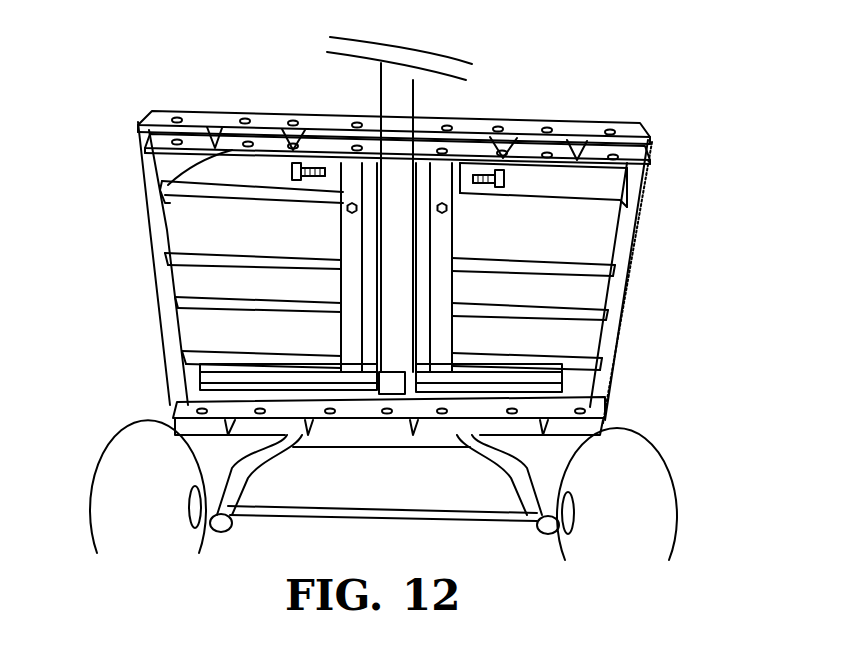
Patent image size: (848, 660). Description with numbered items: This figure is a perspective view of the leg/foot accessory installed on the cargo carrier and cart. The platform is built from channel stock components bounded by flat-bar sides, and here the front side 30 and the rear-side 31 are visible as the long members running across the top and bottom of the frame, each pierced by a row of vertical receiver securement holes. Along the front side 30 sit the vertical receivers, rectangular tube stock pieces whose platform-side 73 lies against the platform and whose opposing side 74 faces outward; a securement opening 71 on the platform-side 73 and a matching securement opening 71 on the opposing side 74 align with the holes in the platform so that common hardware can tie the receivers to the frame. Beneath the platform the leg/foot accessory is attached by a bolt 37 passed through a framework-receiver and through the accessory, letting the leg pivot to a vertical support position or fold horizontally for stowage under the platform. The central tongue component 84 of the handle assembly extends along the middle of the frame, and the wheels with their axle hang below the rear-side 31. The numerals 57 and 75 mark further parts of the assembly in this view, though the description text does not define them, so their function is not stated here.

The front side 30 is at (168, 203).
The rear-side 31 is at (178, 402).
The bolt 37 is at (290, 167).
The support rail 57 is at (440, 337).
The securement opening 71 is at (548, 165).
The platform-side 73 is at (524, 152).
The opposing side 74 is at (628, 140).
The upper plate 75 is at (546, 130).
The tongue component 84 is at (400, 388).